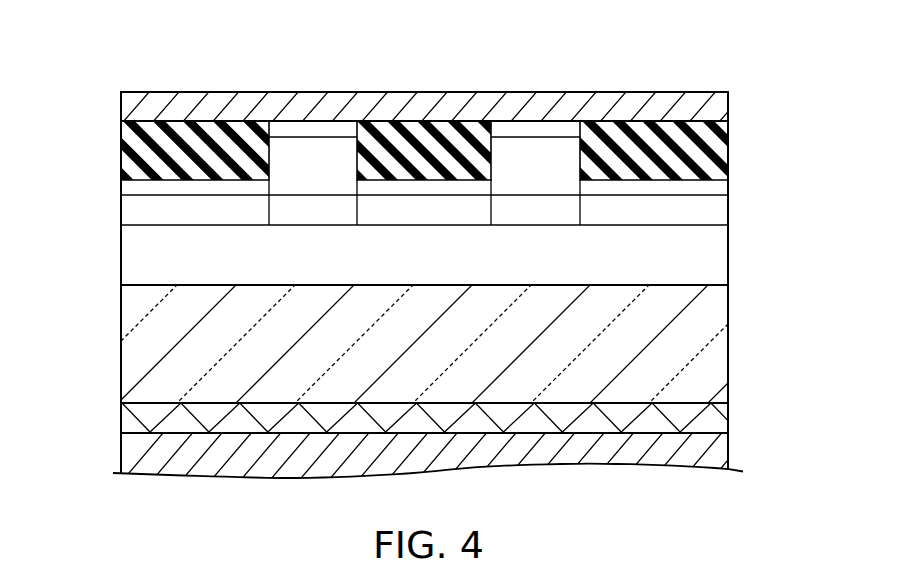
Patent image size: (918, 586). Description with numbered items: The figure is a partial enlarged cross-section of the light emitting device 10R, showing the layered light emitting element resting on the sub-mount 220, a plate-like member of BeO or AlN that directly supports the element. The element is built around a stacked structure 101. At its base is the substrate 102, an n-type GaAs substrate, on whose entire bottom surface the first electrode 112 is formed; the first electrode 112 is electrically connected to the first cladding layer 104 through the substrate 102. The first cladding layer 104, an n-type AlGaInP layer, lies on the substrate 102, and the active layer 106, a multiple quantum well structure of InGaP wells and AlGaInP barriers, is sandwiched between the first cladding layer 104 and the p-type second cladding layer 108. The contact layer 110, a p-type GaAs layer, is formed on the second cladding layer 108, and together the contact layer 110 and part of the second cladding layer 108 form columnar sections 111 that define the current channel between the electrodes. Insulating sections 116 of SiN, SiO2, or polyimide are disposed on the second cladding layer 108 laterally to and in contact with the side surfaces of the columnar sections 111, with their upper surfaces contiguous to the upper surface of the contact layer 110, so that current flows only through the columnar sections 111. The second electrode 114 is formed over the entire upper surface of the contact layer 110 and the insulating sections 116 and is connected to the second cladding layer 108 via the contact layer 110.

The light emitting device 10R is at (738, 56).
The stacked structure 101 is at (743, 120).
The substrate 102 is at (133, 347).
The first cladding layer 104 is at (132, 258).
The active layer 106 is at (132, 205).
The second cladding layer 108 is at (133, 187).
The contact layer 110 is at (305, 131).
The columnar section 111 is at (327, 110).
The first electrode 112 is at (133, 419).
The second electrode 114 is at (132, 107).
The insulating section 116 is at (133, 148).
The sub-mount 220 is at (135, 458).